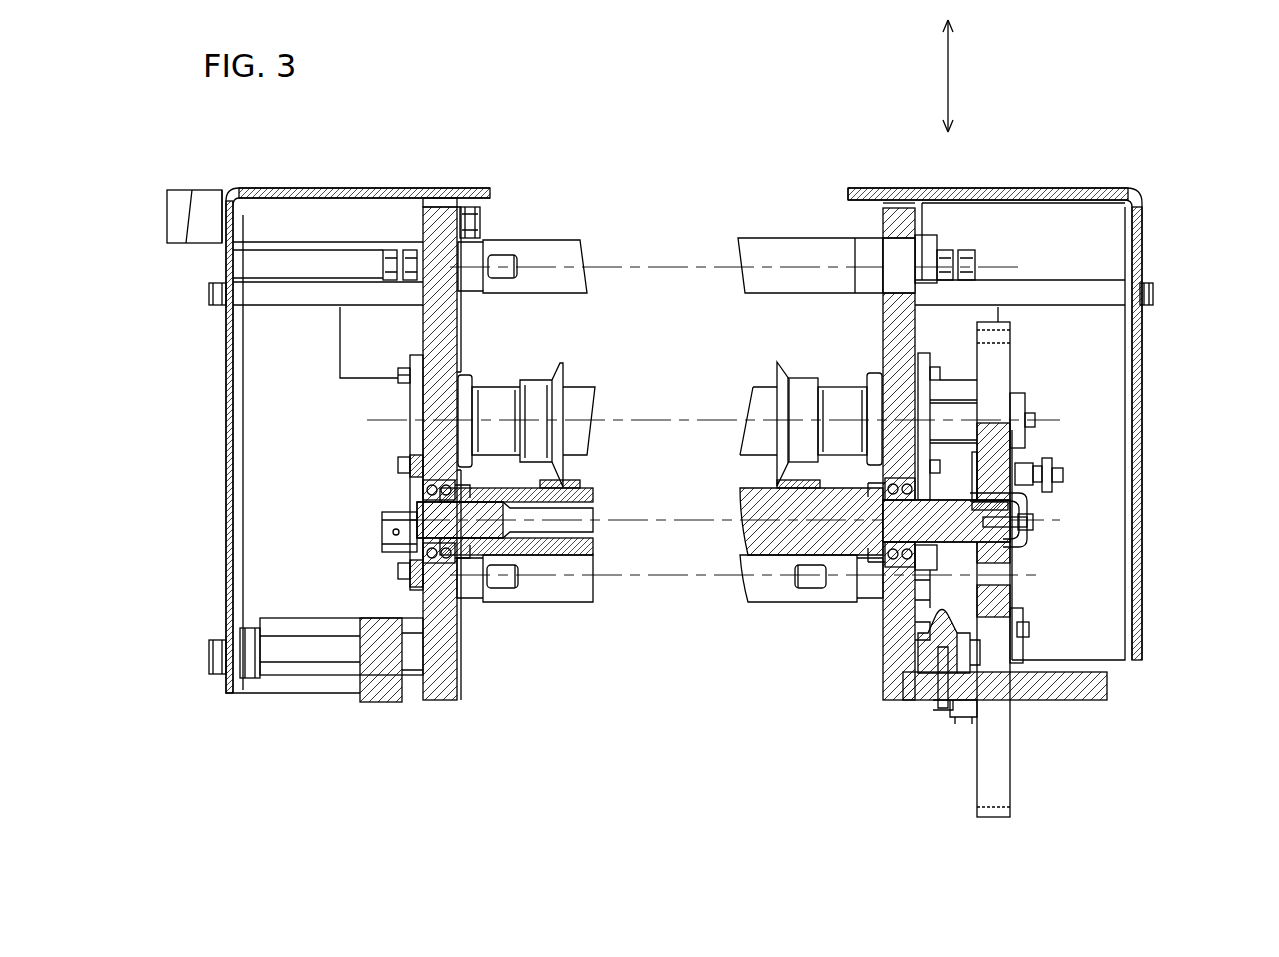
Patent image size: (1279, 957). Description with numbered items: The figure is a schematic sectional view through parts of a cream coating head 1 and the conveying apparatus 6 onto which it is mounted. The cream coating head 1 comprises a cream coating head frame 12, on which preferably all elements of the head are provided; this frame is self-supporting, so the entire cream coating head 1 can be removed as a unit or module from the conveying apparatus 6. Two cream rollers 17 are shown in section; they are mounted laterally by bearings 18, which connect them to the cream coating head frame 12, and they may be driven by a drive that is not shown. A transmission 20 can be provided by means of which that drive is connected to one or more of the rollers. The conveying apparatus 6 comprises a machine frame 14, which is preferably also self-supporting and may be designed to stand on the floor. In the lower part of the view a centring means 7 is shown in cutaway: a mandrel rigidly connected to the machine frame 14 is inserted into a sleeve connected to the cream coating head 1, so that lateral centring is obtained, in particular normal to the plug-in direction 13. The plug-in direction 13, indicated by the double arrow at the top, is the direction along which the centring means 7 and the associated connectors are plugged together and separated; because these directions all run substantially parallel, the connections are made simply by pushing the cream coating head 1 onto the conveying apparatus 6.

The cream coating head 1 is at (1027, 193).
The cream coating head frame 12 is at (532, 257).
The plug-in direction 13 is at (948, 53).
The bearings 18 is at (410, 422).
The cream rollers 17 is at (498, 437).
The transmission 20 is at (993, 550).
The centring means 7 is at (943, 632).
The conveying apparatus 6 is at (1065, 685).
The machine frame 14 is at (990, 569).